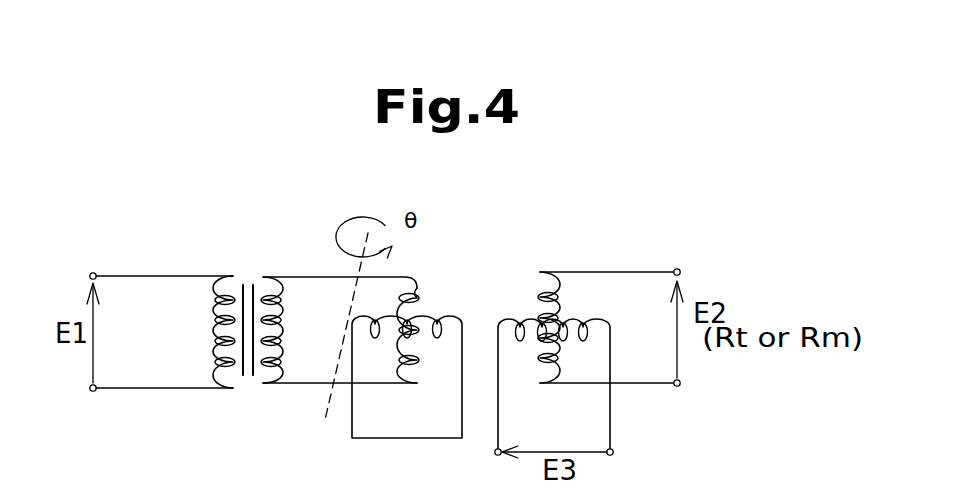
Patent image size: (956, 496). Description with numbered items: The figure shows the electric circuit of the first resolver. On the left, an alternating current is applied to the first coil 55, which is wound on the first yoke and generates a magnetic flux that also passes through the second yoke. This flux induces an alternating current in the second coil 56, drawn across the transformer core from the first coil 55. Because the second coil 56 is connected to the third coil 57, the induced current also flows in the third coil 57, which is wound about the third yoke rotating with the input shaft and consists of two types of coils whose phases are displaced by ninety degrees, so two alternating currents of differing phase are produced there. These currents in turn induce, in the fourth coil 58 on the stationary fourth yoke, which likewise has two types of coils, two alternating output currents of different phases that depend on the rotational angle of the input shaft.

The first coil 55 is at (217, 277).
The second coil 56 is at (278, 279).
The third coil 57 is at (429, 316).
The fourth coil 58 is at (528, 320).